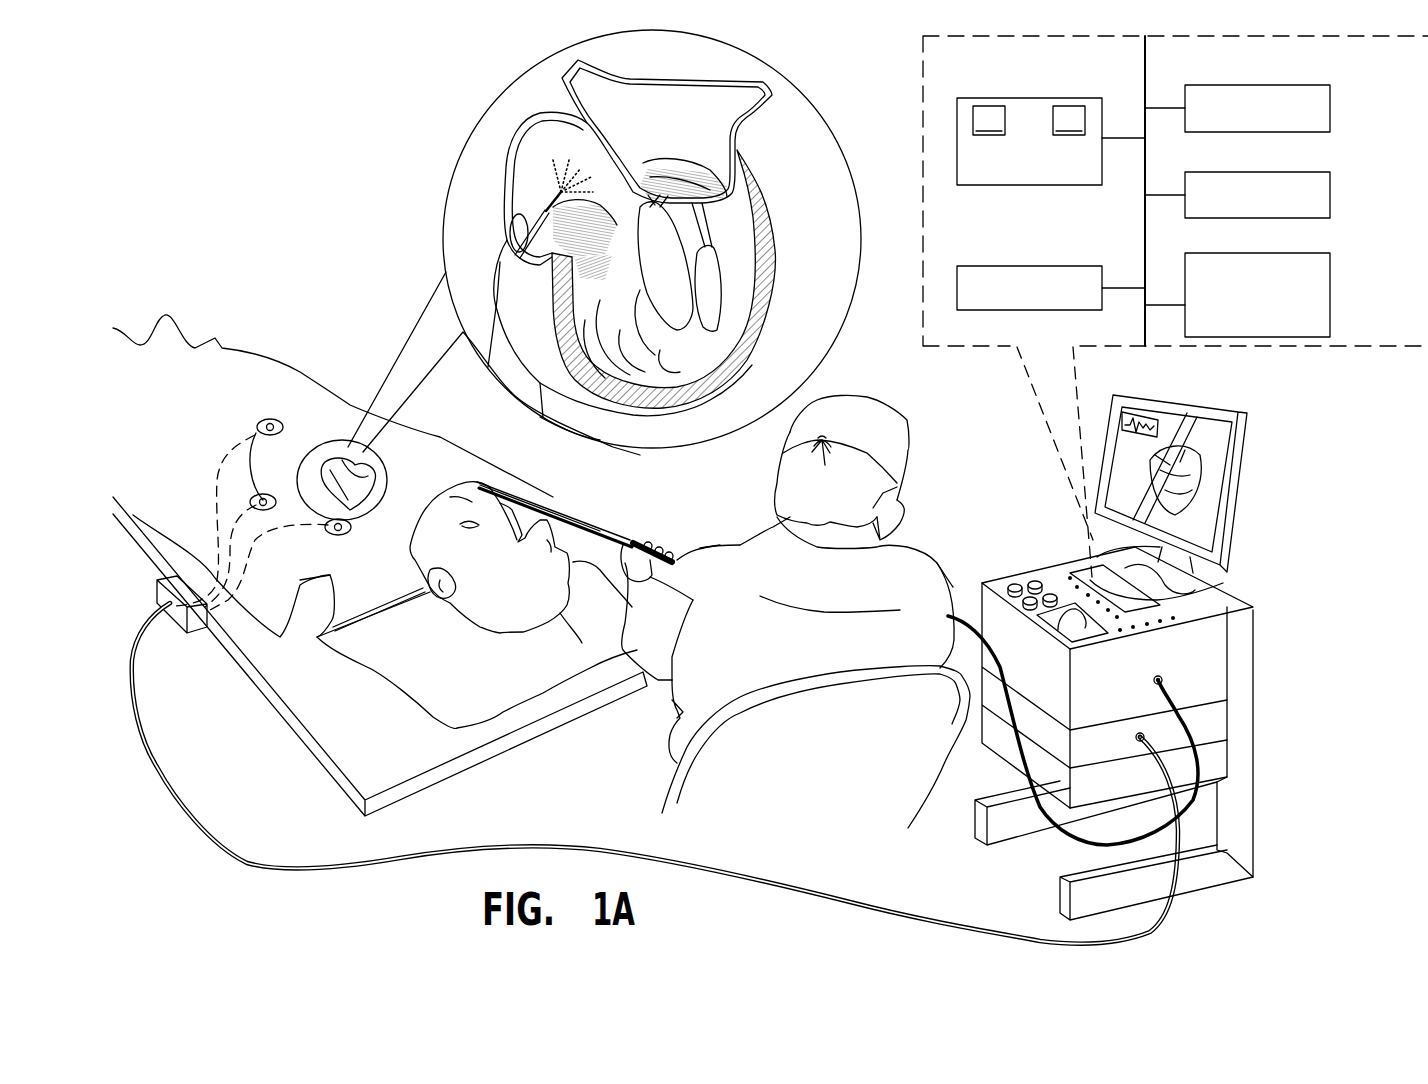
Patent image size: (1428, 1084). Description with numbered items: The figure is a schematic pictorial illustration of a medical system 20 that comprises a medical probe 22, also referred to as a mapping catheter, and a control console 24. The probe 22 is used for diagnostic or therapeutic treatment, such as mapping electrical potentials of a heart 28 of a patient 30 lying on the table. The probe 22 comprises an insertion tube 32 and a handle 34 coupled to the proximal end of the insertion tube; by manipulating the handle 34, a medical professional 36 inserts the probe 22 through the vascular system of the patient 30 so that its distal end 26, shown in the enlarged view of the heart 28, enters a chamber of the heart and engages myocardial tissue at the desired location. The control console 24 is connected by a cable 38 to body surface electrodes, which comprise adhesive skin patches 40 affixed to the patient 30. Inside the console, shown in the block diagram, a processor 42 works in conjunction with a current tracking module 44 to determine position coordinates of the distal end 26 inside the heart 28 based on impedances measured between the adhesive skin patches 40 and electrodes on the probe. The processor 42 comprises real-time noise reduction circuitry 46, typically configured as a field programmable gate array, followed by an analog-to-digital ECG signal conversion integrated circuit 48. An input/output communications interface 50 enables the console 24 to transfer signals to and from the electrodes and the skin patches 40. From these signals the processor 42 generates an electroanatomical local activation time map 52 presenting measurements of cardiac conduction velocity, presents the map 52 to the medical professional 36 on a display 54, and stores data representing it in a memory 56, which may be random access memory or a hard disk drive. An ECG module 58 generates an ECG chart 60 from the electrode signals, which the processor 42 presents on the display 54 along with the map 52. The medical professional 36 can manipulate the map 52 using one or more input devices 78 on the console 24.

The medical system 20 is at (850, 377).
The medical probe 22 is at (580, 498).
The control console 24 is at (1149, 713).
The distal end 26 is at (586, 156).
The heart 28 is at (775, 222).
The patient 30 is at (450, 612).
The insertion tube 32 is at (575, 502).
The handle 34 is at (660, 520).
The medical professional 36 is at (913, 566).
The cable 38 is at (546, 845).
The adhesive skin patches 40 is at (264, 427).
The processor 42 is at (1051, 158).
The current tracking module 44 is at (1332, 305).
The real-time noise reduction circuitry 46 is at (989, 120).
The analog-to-digital ECG signal conversion integrated circuit 48 is at (1069, 120).
The input/output communications interface 50 is at (1332, 105).
The electroanatomical local activation time map 52 is at (1167, 450).
The display 54 is at (1194, 479).
The memory 56 is at (1000, 313).
The ECG module 58 is at (1332, 193).
The ECG chart 60 is at (1125, 423).
The input devices 78 is at (1030, 582).